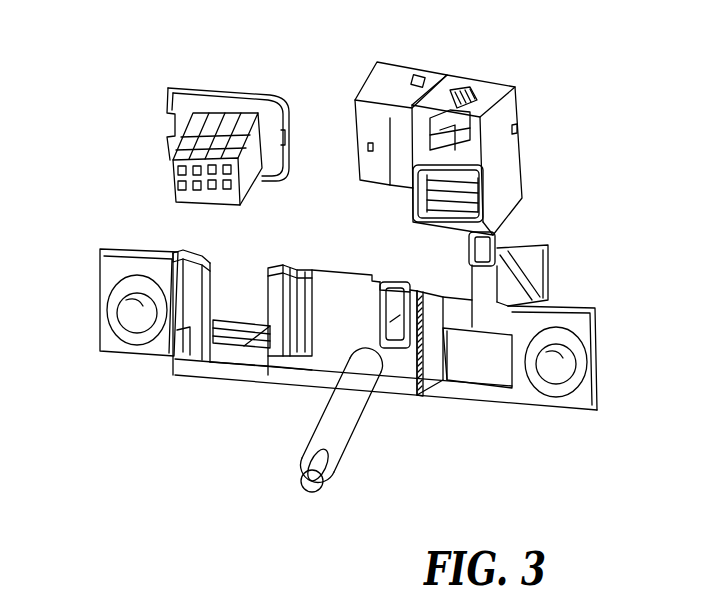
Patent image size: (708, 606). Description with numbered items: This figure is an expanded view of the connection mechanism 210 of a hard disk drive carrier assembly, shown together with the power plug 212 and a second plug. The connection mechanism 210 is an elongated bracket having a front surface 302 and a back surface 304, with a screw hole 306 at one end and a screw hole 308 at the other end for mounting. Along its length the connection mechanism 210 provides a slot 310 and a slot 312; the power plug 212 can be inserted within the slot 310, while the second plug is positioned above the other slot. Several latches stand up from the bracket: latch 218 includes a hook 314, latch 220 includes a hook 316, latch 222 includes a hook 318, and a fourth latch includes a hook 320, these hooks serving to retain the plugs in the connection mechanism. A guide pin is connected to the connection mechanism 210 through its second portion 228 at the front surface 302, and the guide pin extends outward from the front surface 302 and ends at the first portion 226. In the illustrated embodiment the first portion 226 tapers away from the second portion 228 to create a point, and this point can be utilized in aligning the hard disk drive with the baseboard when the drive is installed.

The connection mechanism 210 is at (107, 182).
The power plug 212 is at (197, 87).
The latch 218 is at (190, 327).
The latch 220 is at (245, 330).
The latch 222 is at (386, 320).
The first portion 226 is at (300, 466).
The second portion 228 is at (325, 431).
The front surface 302 is at (442, 412).
The back surface 304 is at (346, 262).
The screw hole 306 is at (130, 320).
The screw hole 308 is at (561, 370).
The slot 310 is at (243, 300).
The slot 312 is at (457, 306).
The hook 314 is at (205, 258).
The hook 316 is at (288, 262).
The hook 318 is at (414, 277).
The hook 320 is at (489, 233).